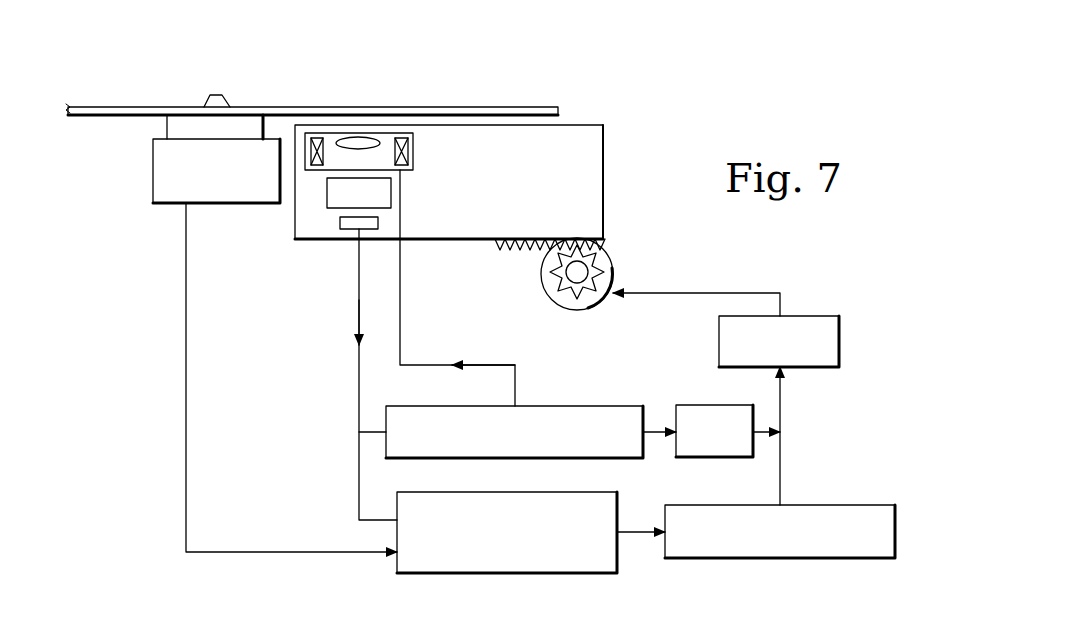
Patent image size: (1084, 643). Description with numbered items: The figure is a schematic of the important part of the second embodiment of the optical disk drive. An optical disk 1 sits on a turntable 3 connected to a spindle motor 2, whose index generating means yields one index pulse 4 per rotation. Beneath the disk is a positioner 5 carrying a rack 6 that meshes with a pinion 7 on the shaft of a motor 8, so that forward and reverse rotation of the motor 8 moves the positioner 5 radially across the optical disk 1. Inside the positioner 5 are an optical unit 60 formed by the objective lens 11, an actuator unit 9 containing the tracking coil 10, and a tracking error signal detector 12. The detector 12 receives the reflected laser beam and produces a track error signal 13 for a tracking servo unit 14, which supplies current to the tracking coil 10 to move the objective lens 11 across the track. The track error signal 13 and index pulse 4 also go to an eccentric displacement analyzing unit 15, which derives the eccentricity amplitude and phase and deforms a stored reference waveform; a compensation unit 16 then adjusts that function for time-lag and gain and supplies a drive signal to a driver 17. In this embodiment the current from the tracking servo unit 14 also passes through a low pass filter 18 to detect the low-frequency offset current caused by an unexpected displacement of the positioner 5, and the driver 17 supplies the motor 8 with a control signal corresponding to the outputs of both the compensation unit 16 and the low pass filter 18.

The optical disk 1 is at (486, 107).
The spindle motor 2 is at (151, 178).
The turntable 3 is at (186, 124).
The index pulse 4 is at (186, 239).
The positioner 5 is at (603, 152).
The rack 6 is at (584, 240).
The pinion 7 is at (594, 262).
The motor 8 is at (614, 275).
The actuator unit 9 is at (413, 147).
The tracking coil 10 is at (400, 136).
The objective lens 11 is at (355, 137).
The tracking error signal detector 12 is at (340, 222).
The track error signal 13 is at (359, 455).
The tracking servo unit 14 is at (566, 406).
The eccentric displacement analyzing unit 15 is at (447, 573).
The compensation unit 16 is at (725, 558).
The driver 17 is at (808, 316).
The low pass filter 18 is at (708, 405).
The optical unit 60 is at (327, 192).